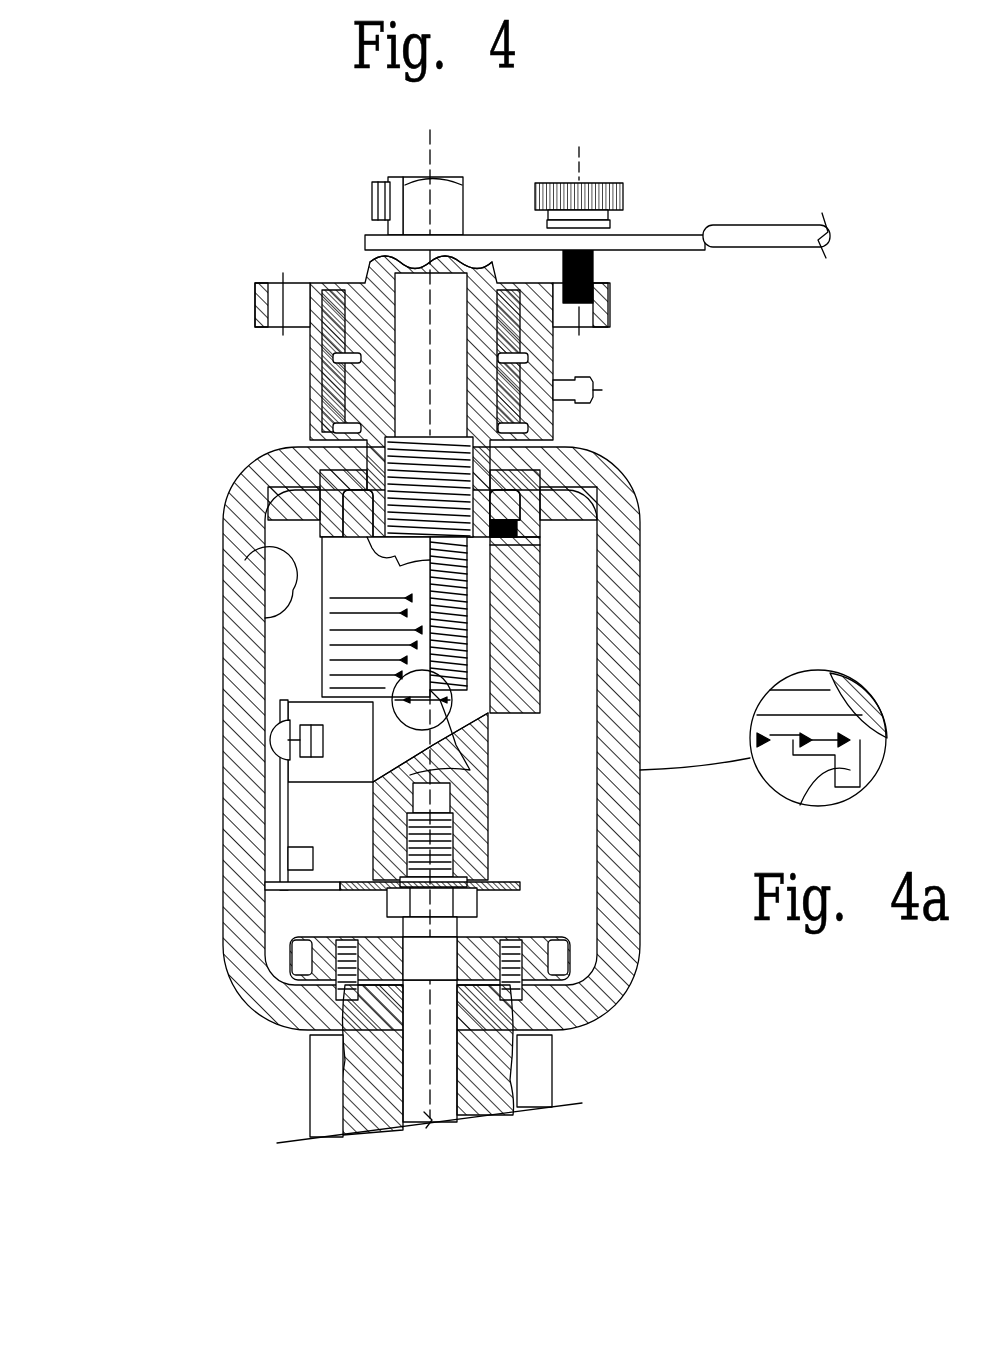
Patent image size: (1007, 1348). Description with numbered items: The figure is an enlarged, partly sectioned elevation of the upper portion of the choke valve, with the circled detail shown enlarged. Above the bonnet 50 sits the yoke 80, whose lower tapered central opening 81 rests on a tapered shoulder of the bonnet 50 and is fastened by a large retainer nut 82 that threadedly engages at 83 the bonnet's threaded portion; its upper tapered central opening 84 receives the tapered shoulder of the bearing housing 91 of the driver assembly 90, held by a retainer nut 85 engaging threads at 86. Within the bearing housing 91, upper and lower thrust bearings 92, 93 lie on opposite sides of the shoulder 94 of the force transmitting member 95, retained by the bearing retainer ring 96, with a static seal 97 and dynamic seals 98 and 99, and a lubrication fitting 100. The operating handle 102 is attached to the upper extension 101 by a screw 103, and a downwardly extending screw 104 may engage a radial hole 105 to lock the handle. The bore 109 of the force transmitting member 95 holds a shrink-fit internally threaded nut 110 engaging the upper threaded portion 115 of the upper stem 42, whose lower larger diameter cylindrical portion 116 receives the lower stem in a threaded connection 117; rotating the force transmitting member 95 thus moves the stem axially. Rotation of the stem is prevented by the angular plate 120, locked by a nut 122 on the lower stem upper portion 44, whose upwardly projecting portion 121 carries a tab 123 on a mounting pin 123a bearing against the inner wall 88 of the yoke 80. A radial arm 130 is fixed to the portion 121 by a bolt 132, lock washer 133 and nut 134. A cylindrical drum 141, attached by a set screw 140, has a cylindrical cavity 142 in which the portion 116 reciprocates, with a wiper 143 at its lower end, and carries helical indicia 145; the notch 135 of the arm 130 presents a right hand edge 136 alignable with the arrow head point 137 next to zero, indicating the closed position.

In FIG. 4, the upper stem 42 is at (640, 897).
In FIG. 4, the lower stem upper portion 44 is at (431, 1122).
In FIG. 4, the bonnet 50 is at (540, 1097).
In FIG. 4, the yoke 80 is at (240, 512).
In FIG. 4, the lower tapered central opening 81 is at (517, 1075).
In FIG. 4, the retainer nut 82 is at (580, 1023).
In FIG. 4, the threaded engagement 83 is at (600, 925).
In FIG. 4, the upper tapered central opening 84 is at (553, 453).
In FIG. 4, the retainer nut 85 is at (633, 498).
In FIG. 4, the threads 86 is at (565, 478).
In FIG. 4, the inner wall 88 is at (330, 548).
In FIG. 4, the driver assembly 90 is at (310, 395).
In FIG. 4, the bearing housing 91 is at (312, 425).
In FIG. 4, the upper thrust bearing 92 is at (553, 357).
In FIG. 4, the lower thrust bearing 93 is at (553, 425).
In FIG. 4, the shoulder 94 is at (553, 373).
In FIG. 4, the force transmitting member 95 is at (368, 243).
In FIG. 4, the bearing retainer ring 96 is at (325, 340).
In FIG. 4, the static seal 97 is at (270, 290).
In FIG. 4, the dynamic seal 98 is at (365, 270).
In FIG. 4, the dynamic seal 99 is at (265, 458).
In FIG. 4, the lubrication fitting 100 is at (590, 385).
In FIG. 4, the upper extension 101 is at (440, 190).
In FIG. 4, the operating handle 102 is at (720, 237).
In FIG. 4, the screw 103 is at (372, 195).
In FIG. 4, the downwardly extending screw 104 is at (610, 257).
In FIG. 4, the radial hole 105 is at (283, 320).
In FIG. 4, the bore 109 is at (460, 334).
In FIG. 4, the internally threaded nut 110 is at (427, 282).
In FIG. 4, the upper threaded portion 115 is at (470, 605).
In FIG. 4, the lower larger diameter cylindrical portion 116 is at (480, 752).
In FIG. 4, the threaded connection 117 is at (453, 860).
In FIG. 4, the angular plate 120 is at (320, 887).
In FIG. 4, the upwardly projecting portion 121 is at (283, 762).
In FIG. 4, the nut 122 is at (320, 920).
In FIG. 4, the tab 123 is at (273, 837).
In FIG. 4, the mounting pin 123a is at (310, 857).
In FIG. 4, the radial arm 130 is at (345, 776).
In FIG. 4, the bolt 132 is at (300, 727).
In FIG. 4, the lock washer 133 is at (320, 707).
In FIG. 4, the nut 134 is at (318, 692).
In FIG. 4A, the notch 135 is at (807, 753).
In FIG. 4A, the right hand edge 136 is at (805, 790).
In FIG. 4A, the arrow head point 137 is at (830, 673).
In FIG. 4, the set screw 140 is at (585, 548).
In FIG. 4, the cylindrical drum 141 is at (585, 558).
In FIG. 4, the cylindrical cavity 142 is at (520, 650).
In FIG. 4, the wiper 143 is at (630, 687).
In FIG. 4, the indicia 145 is at (390, 637).